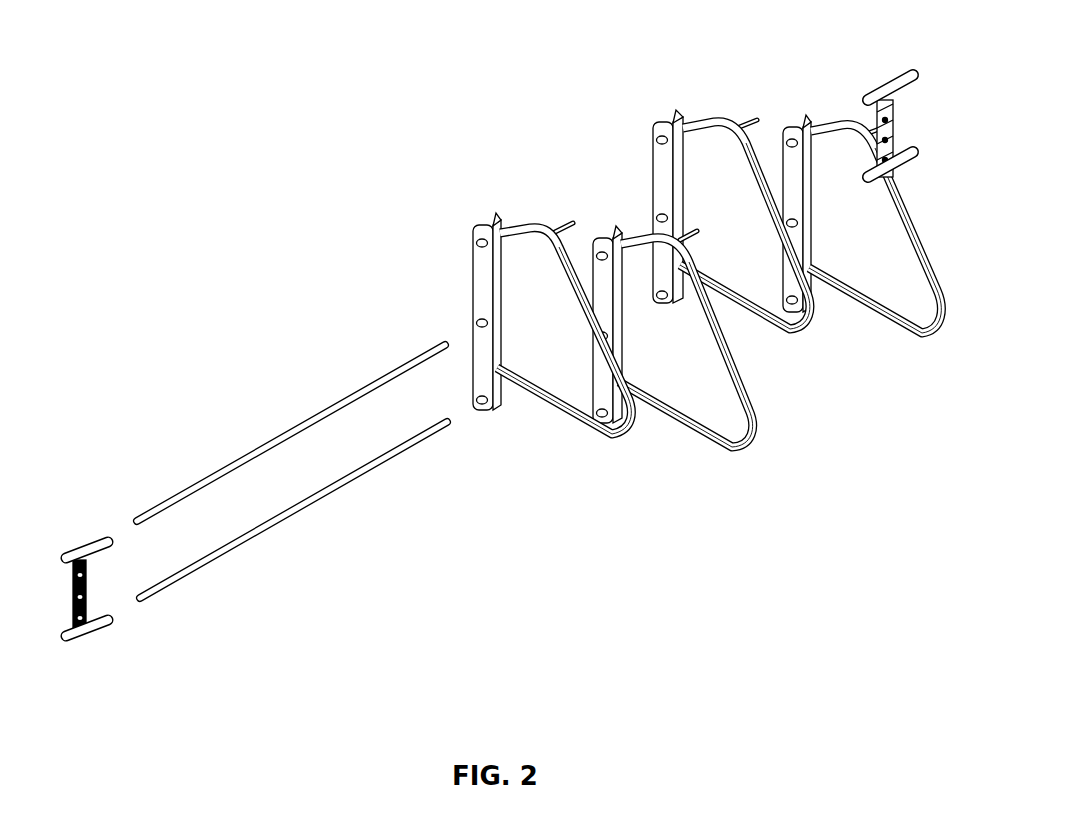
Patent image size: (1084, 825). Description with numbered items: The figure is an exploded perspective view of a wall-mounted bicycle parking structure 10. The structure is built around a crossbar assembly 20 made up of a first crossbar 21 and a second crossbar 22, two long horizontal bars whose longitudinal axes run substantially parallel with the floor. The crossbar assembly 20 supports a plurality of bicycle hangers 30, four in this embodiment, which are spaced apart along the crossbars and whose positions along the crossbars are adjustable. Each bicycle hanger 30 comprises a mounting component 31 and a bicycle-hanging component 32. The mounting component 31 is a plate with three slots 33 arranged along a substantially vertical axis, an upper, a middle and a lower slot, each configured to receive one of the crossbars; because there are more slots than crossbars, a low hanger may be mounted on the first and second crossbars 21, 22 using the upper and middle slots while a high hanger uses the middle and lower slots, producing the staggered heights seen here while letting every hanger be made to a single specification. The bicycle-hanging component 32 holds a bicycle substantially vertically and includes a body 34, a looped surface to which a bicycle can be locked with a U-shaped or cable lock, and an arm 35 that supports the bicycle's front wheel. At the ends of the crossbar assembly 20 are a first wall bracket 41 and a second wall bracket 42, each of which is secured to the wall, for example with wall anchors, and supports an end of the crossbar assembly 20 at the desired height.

The bicycle parking structure 10 is at (496, 331).
The crossbar assembly 20 is at (301, 471).
The first crossbar 21 is at (276, 437).
The second crossbar 22 is at (266, 530).
The bicycle hanger 30 is at (674, 283).
The mounting component 31 is at (480, 270).
The bicycle-hanging component 32 is at (568, 426).
The slots 33 is at (652, 134).
The body 34 is at (762, 320).
The arm 35 is at (748, 113).
The first wall bracket 41 is at (90, 549).
The second wall bracket 42 is at (888, 96).